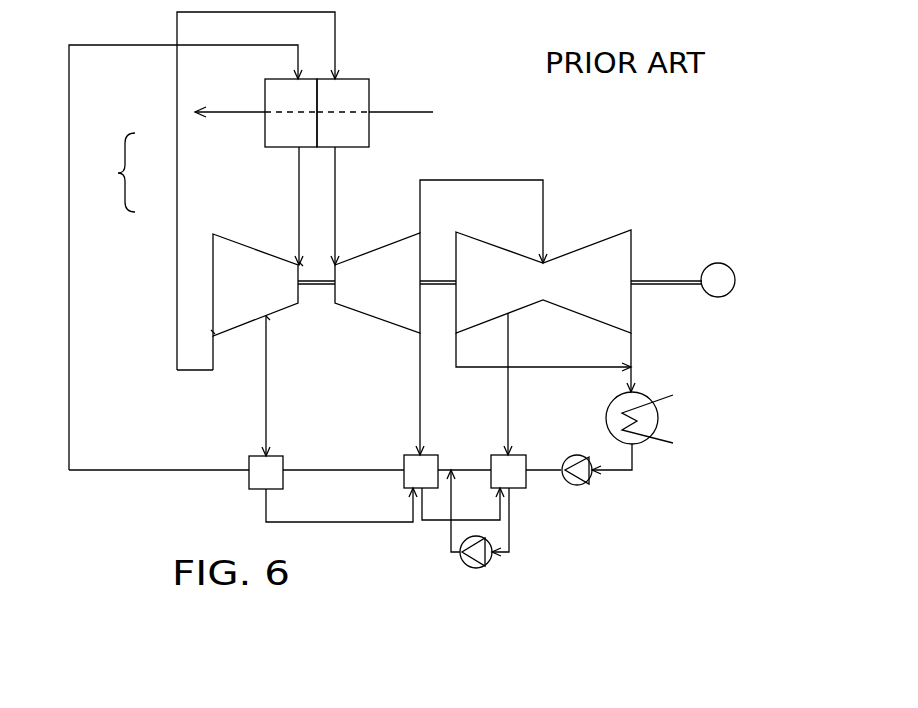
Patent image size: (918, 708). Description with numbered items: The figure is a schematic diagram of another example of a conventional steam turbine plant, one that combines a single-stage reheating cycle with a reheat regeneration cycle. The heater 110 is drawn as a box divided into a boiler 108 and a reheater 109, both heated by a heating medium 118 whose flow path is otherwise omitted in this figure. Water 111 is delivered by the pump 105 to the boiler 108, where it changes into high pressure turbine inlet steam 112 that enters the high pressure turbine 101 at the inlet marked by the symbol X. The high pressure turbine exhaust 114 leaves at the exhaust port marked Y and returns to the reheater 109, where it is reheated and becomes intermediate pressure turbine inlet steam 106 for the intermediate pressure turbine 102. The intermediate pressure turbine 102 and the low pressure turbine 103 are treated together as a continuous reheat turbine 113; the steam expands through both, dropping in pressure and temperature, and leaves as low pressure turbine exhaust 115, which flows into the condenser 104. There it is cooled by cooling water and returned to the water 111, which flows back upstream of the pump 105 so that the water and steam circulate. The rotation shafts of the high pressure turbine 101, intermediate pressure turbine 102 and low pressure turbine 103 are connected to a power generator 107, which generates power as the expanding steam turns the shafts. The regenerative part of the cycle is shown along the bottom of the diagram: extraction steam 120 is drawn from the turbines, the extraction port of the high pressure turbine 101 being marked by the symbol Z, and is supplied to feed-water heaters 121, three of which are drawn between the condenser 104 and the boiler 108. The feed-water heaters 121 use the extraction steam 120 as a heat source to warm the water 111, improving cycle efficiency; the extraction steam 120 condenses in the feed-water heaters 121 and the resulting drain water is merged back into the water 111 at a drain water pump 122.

The high pressure turbine 101 is at (238, 327).
The intermediate pressure turbine 102 is at (393, 243).
The low pressure turbine 103 is at (598, 242).
The condenser 104 is at (640, 440).
The pump 105 is at (580, 455).
The intermediate pressure turbine inlet steam 106 is at (337, 183).
The power generator 107 is at (718, 263).
The boiler 108 is at (265, 130).
The reheater 109 is at (360, 147).
The heater 110 is at (221, 145).
The water 111 is at (620, 472).
The steam 112 is at (297, 218).
The reheat turbine 113 is at (560, 231).
The high pressure turbine exhaust 114 is at (177, 320).
The low pressure turbine exhaust 115 is at (553, 365).
The heating medium 118 is at (407, 112).
The extraction steam 120 is at (266, 372).
The feed-water heater 121 is at (277, 456).
The drain water pump 122 is at (470, 568).
The high pressure turbine inlet X is at (302, 263).
The high pressure turbine steam outlet Y is at (212, 333).
The extraction port of the high pressure turbine Z is at (268, 318).